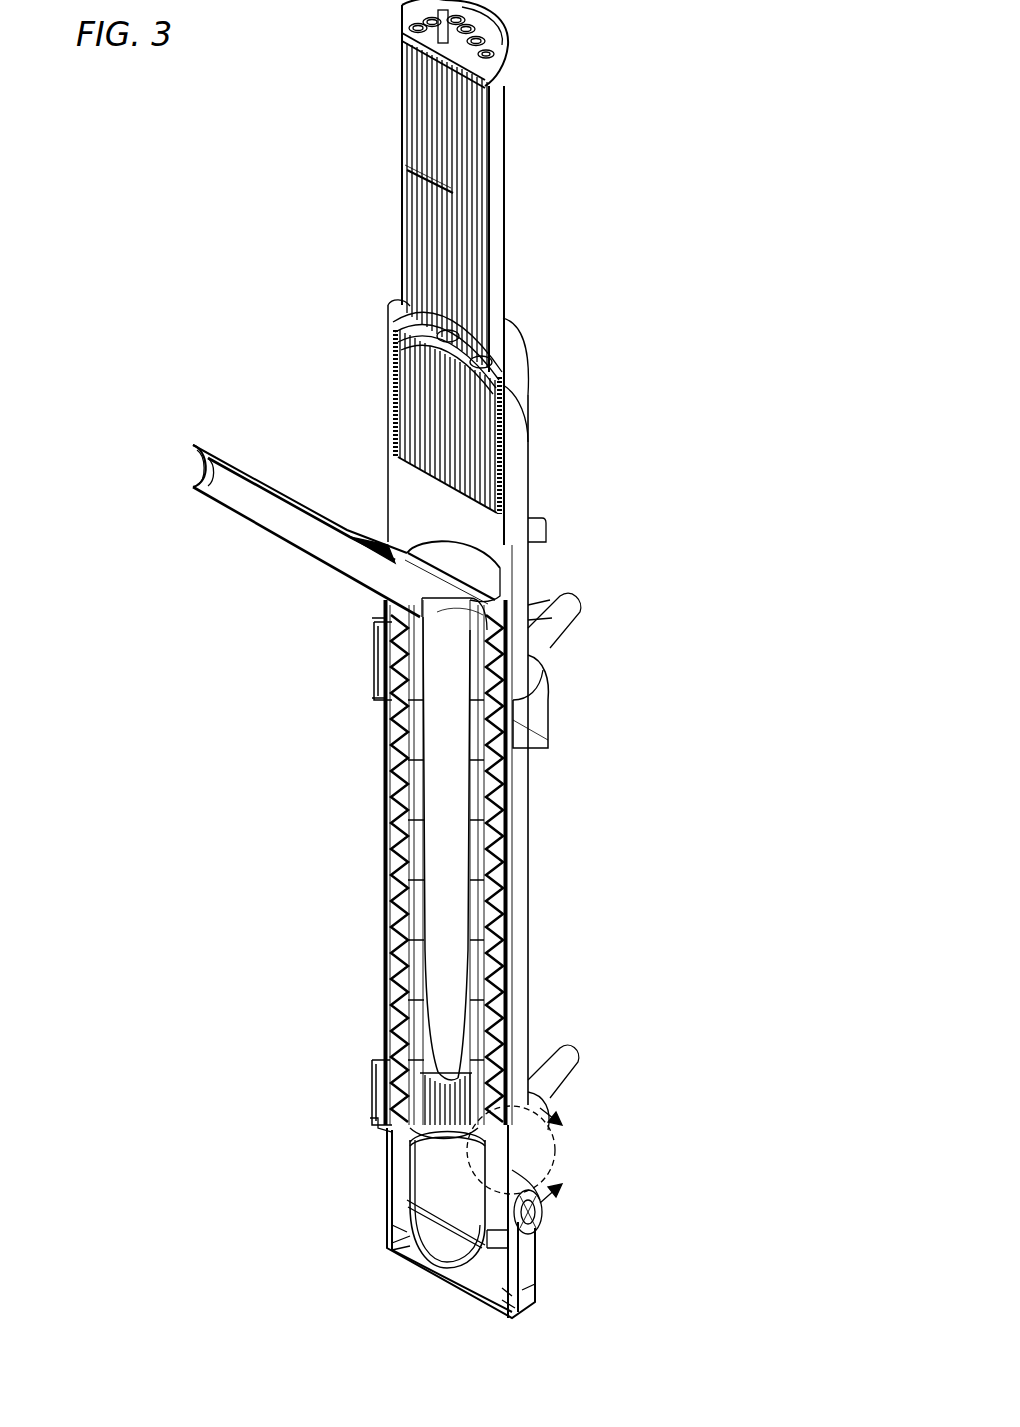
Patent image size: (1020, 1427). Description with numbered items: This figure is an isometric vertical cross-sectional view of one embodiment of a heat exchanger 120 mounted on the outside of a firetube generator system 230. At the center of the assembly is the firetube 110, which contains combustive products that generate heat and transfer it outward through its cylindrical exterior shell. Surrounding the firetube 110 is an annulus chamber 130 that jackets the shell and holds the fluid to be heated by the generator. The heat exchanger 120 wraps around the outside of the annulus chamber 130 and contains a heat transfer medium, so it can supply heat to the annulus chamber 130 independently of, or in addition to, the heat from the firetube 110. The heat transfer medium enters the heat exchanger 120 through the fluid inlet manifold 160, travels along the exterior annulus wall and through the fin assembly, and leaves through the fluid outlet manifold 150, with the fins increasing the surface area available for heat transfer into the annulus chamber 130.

The system 230 is at (662, 329).
The heat exchanger 120 is at (522, 822).
The annulus chamber 130 is at (385, 877).
The fluid outlet manifold 150 is at (375, 652).
The fluid inlet manifold 160 is at (378, 1088).
The firetube 110 is at (432, 1172).